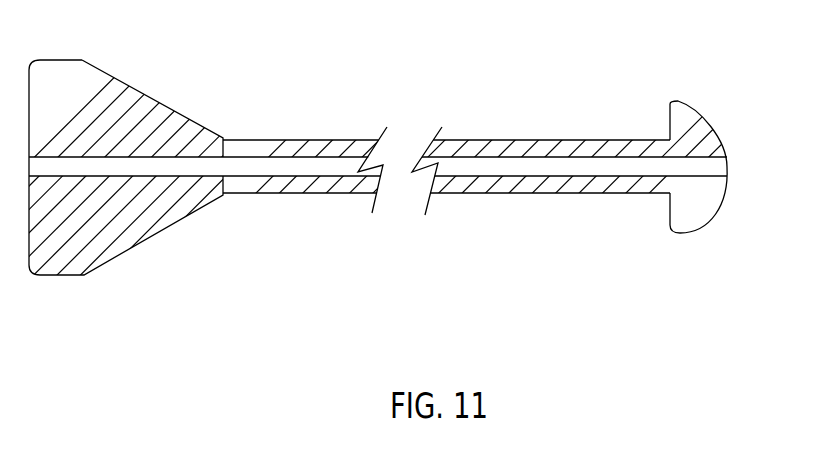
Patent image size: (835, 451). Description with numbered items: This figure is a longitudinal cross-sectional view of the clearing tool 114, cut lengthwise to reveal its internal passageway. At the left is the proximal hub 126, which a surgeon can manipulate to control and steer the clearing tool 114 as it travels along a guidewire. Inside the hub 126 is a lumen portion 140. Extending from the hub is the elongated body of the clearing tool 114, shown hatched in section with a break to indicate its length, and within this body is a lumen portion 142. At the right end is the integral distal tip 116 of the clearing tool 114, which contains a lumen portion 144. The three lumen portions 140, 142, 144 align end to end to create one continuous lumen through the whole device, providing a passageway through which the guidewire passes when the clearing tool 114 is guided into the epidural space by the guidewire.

The proximal hub 126 is at (133, 90).
The clearing tool 114 is at (292, 138).
The lumen portion 140 is at (142, 168).
The lumen portion 142 is at (310, 170).
The integral distal tip 116 is at (697, 110).
The lumen portion 144 is at (708, 165).